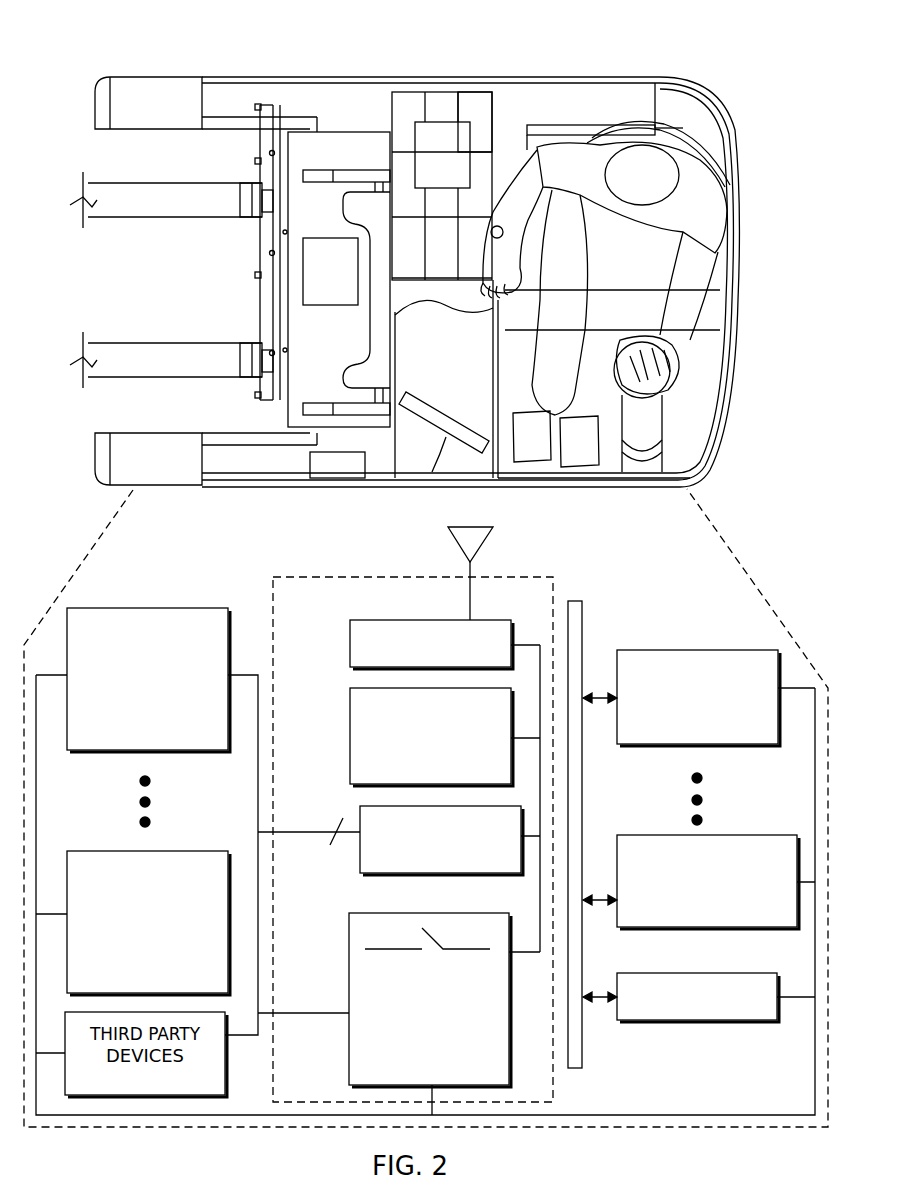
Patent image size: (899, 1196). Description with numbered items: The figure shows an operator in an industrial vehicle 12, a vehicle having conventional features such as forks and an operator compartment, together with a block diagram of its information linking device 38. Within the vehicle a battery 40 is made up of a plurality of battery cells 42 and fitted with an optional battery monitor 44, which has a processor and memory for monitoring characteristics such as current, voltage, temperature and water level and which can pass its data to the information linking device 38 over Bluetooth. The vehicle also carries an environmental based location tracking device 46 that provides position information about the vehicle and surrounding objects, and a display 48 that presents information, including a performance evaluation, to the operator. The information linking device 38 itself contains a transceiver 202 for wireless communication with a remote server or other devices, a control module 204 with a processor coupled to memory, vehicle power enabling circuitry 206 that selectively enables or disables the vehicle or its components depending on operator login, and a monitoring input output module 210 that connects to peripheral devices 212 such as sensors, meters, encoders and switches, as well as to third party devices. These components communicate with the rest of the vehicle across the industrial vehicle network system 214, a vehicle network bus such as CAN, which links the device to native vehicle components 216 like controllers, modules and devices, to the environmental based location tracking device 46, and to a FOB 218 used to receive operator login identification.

The industrial vehicle 12 is at (716, 450).
The information linking device 38 is at (342, 463).
The battery 40 is at (405, 90).
The battery cells 42 is at (475, 95).
The battery monitor 44 is at (450, 118).
The environmental based location tracking device 46 is at (303, 278).
The display 48 is at (440, 438).
The transceiver 202 is at (350, 637).
The control module 204 is at (350, 705).
The vehicle power enabling circuitry 206 is at (349, 940).
The monitoring input output (I/O) module 210 is at (360, 820).
The peripheral devices 212 is at (135, 606).
The industrial vehicle network system 214 is at (577, 600).
The native vehicle components 216 is at (712, 650).
The FOB 218 is at (725, 1023).